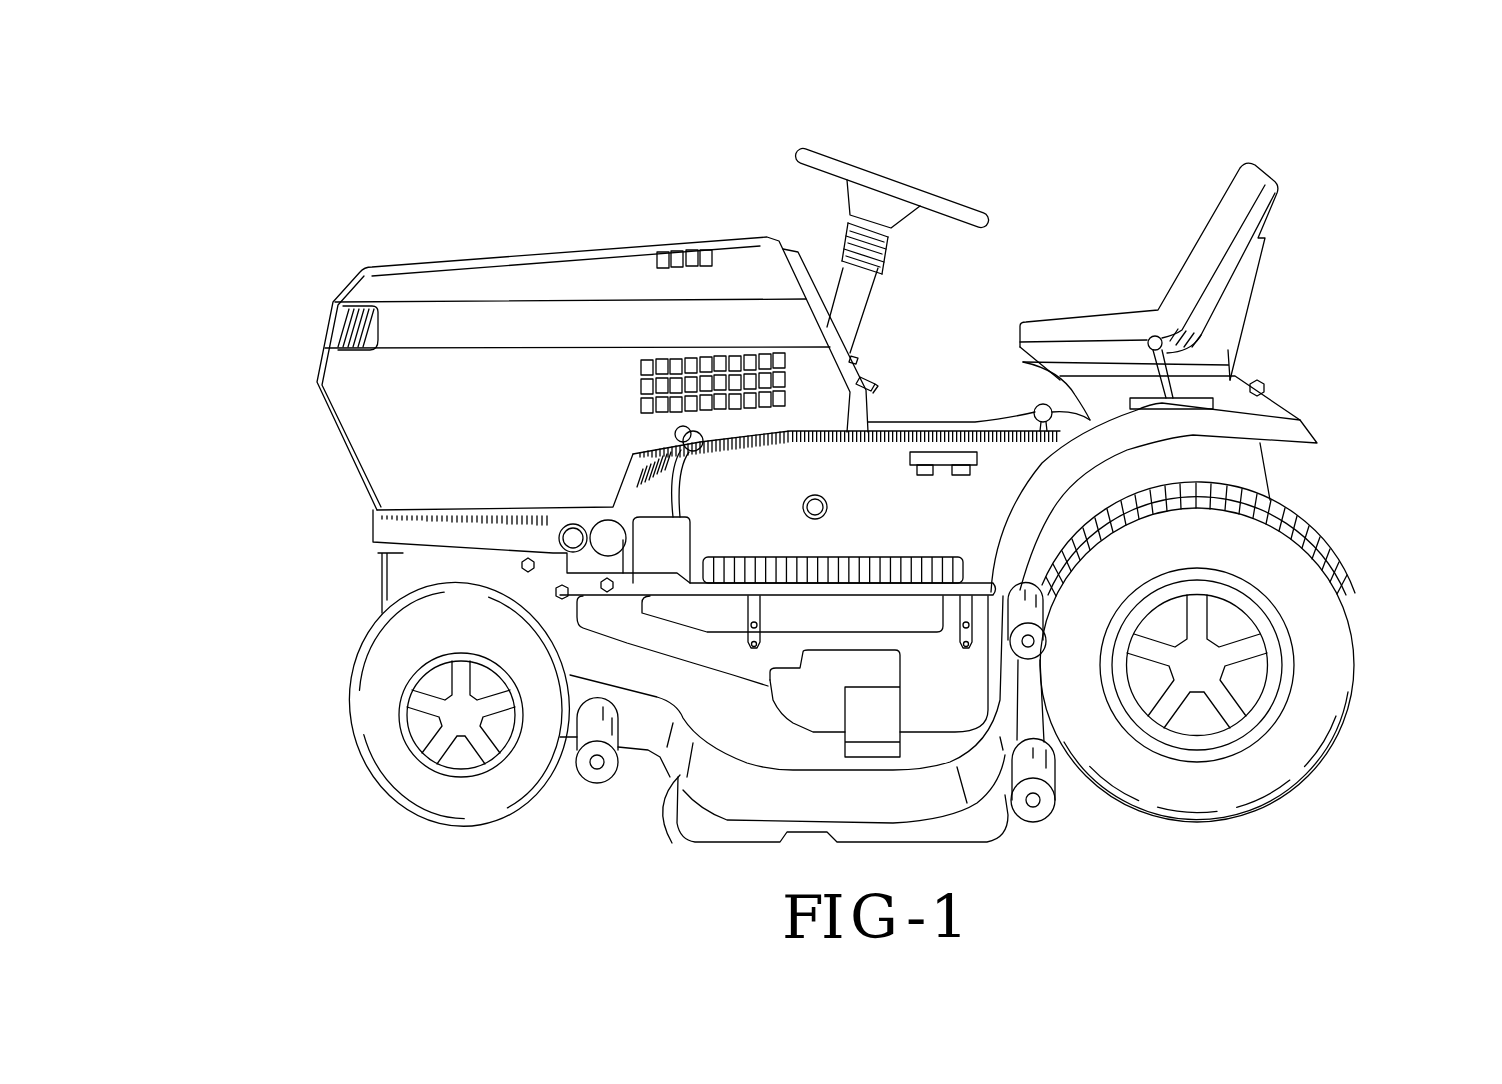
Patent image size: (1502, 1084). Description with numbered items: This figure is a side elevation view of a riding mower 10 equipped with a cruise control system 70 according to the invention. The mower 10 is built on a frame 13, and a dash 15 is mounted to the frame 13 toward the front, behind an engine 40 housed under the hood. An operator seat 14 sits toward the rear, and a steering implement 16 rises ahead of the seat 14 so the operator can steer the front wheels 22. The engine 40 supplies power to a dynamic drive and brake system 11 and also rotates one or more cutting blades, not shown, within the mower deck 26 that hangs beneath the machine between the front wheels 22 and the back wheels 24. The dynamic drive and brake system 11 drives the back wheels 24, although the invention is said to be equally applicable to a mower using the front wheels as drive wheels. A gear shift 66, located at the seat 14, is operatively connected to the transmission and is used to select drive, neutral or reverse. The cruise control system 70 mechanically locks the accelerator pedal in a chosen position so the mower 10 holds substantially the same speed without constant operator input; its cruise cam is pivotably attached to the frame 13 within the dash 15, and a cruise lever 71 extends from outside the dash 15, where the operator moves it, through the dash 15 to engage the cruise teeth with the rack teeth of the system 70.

The mower 10 is at (1107, 222).
The dynamic drive and brake system 11 is at (1350, 428).
The frame 13 is at (390, 555).
The operator seat 14 is at (1217, 213).
The dash 15 is at (860, 375).
The steering implement 16 is at (893, 188).
The front wheels 22 is at (372, 723).
The back wheels 24 is at (1326, 670).
The mower deck 26 is at (672, 843).
The engine 40 is at (317, 303).
The gear shift 66 is at (1163, 338).
The cruise control system 70 is at (975, 282).
The cruise lever 71 is at (857, 352).